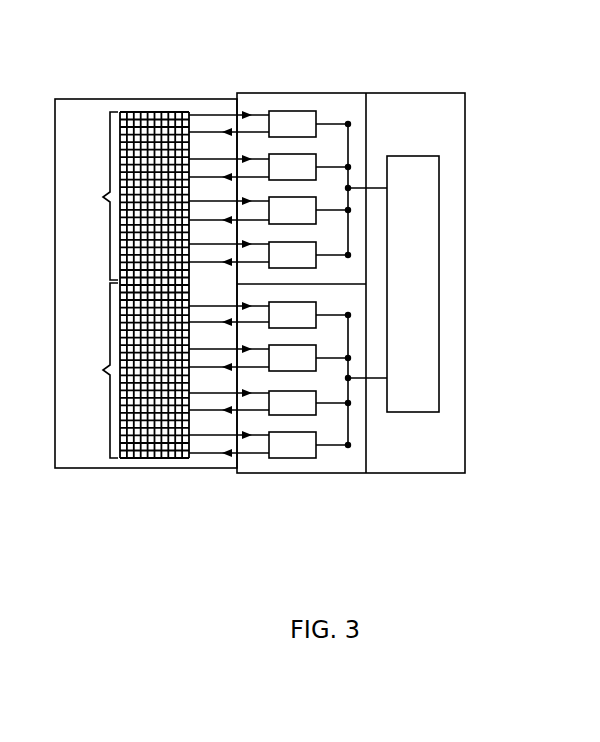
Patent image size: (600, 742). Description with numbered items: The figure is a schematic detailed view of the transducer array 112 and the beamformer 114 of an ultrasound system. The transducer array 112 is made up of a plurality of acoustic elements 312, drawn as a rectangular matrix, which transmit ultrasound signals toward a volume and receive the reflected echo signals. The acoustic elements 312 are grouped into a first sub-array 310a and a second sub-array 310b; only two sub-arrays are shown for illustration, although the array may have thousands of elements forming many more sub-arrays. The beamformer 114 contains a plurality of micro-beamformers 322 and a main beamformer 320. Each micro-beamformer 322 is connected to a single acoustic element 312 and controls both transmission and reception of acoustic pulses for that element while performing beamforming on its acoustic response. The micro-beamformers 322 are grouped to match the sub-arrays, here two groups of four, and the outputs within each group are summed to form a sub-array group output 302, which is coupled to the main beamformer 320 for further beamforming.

The transducer array 112 is at (216, 96).
The beamformer 114 is at (470, 140).
The sub-array group output 302 is at (358, 182).
The sub-array 310a is at (94, 196).
The sub-array 310b is at (94, 370).
The acoustic element 312 is at (153, 136).
The main beamformer 320 is at (410, 156).
The micro-beamformer 322 is at (300, 158).